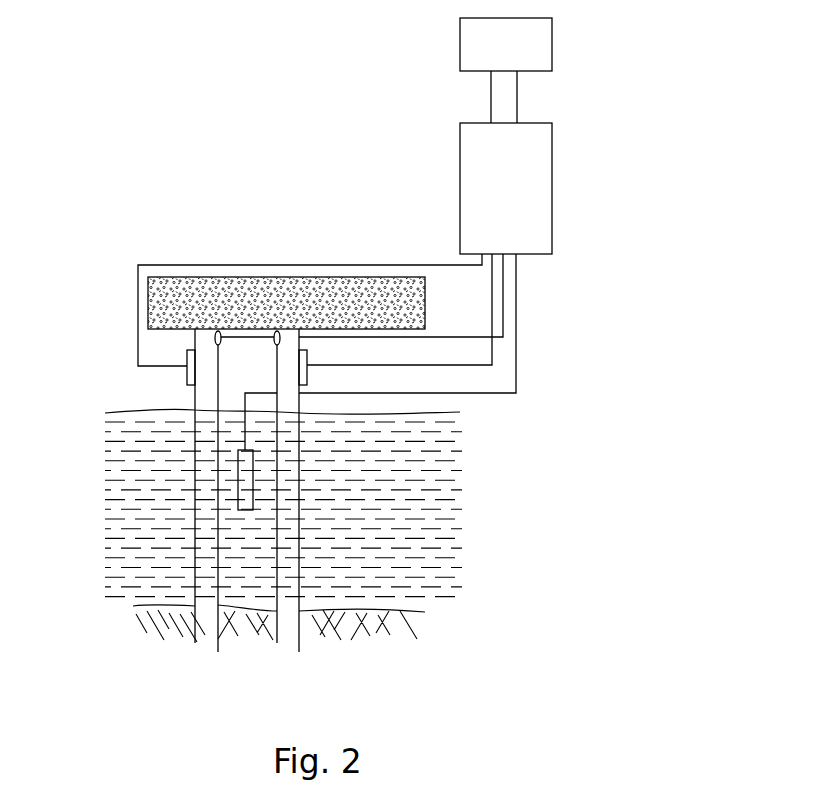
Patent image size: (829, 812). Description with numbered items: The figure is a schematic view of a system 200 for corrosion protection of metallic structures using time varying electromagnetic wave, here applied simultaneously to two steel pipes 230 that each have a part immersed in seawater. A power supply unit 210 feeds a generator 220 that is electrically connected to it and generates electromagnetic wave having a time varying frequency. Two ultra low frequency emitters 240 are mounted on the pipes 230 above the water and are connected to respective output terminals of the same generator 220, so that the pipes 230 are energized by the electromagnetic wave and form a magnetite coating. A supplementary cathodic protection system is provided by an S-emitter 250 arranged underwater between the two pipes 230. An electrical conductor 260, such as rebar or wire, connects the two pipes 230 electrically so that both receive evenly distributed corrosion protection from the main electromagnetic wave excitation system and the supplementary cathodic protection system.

The system 200 is at (593, 397).
The power supply unit 210 is at (532, 47).
The generator 220 is at (542, 203).
The steel pipes 230 is at (207, 528).
The ultra low frequency (ULF) emitters 240 is at (307, 368).
The S-emitter 250 is at (247, 490).
The electrical conductor 260 is at (247, 339).